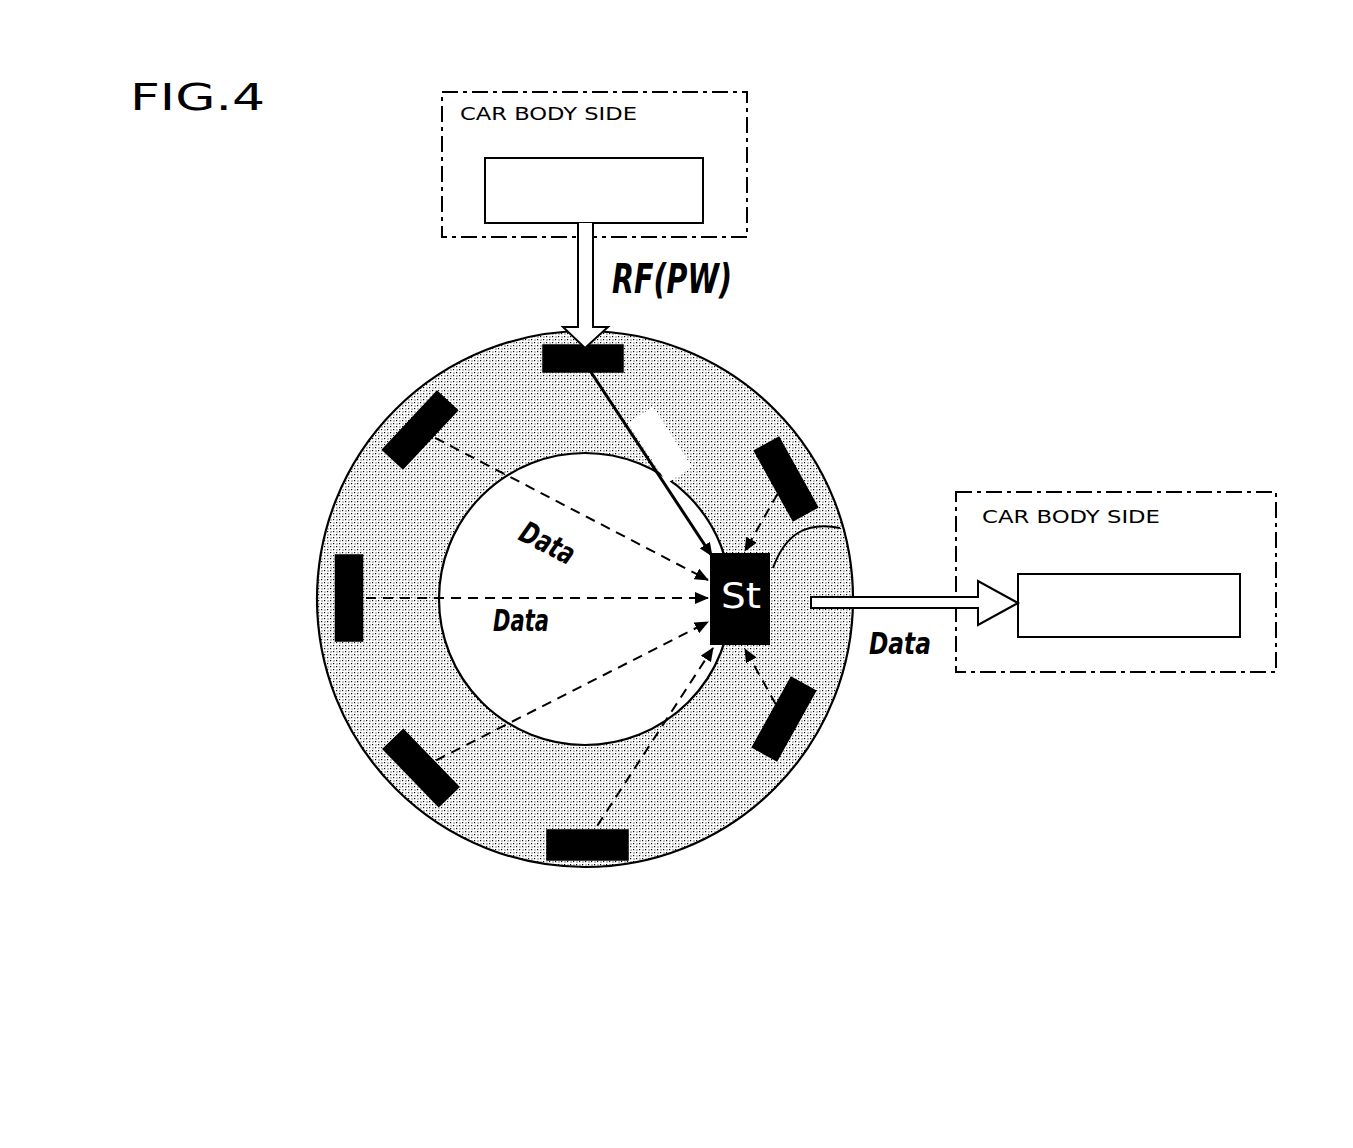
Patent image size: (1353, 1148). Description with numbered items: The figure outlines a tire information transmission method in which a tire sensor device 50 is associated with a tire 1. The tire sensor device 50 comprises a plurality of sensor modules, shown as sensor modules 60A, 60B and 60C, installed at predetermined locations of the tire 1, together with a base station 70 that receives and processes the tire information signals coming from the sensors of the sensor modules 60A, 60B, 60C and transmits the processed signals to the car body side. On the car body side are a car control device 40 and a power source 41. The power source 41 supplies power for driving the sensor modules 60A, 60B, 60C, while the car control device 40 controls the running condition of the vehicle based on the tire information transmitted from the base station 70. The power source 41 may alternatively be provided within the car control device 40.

The tire 1 is at (700, 352).
The car control device 40 is at (1102, 570).
The power source 41 is at (622, 158).
The tire sensor device 50 is at (784, 366).
The sensor module 60A is at (333, 553).
The sensor module 60B is at (548, 343).
The sensor module 60C is at (412, 404).
The base station 70 is at (840, 530).